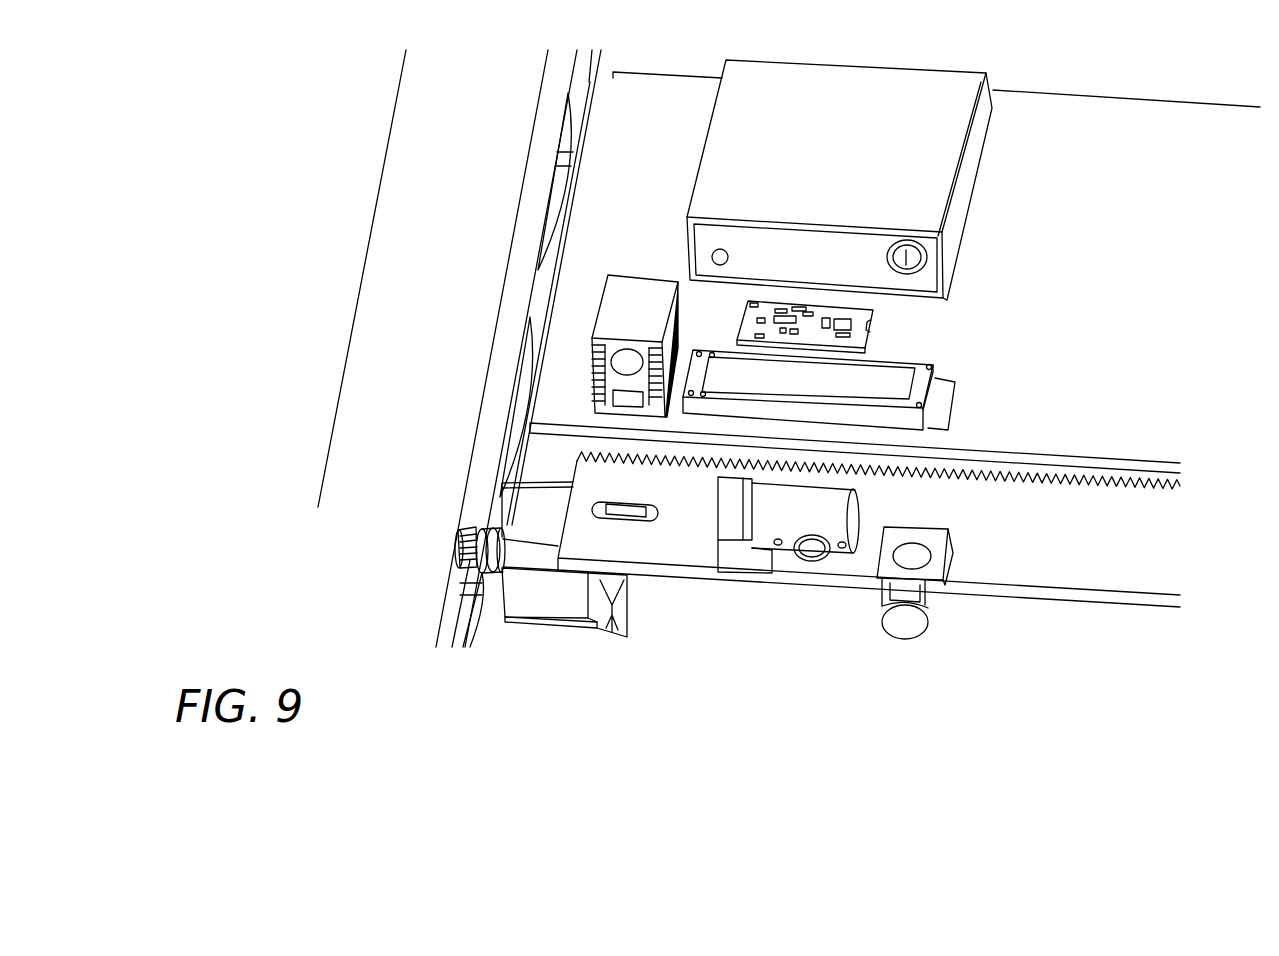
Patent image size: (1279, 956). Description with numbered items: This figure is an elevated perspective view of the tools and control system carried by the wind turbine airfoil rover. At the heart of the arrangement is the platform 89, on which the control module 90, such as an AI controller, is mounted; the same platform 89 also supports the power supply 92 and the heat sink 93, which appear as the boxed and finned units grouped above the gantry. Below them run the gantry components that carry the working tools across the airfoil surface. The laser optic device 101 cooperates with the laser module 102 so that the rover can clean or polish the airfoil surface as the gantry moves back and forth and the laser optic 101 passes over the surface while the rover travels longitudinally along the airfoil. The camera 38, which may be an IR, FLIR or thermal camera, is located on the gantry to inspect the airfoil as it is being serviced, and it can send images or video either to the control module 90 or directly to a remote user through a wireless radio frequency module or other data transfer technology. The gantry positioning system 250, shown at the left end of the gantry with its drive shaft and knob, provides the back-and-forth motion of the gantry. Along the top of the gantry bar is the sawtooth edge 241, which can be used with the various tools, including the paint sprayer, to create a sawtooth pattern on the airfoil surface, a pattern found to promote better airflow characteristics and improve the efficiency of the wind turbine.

The camera 38 is at (768, 528).
The platform 89 is at (1178, 305).
The control module 90 is at (876, 332).
The power supply 92 is at (970, 168).
The heat sink 93 is at (640, 293).
The laser optic device 101 is at (935, 607).
The laser module 102 is at (945, 400).
The sawtooth edge 241 is at (1100, 488).
The gantry positioning system 250 is at (538, 603).